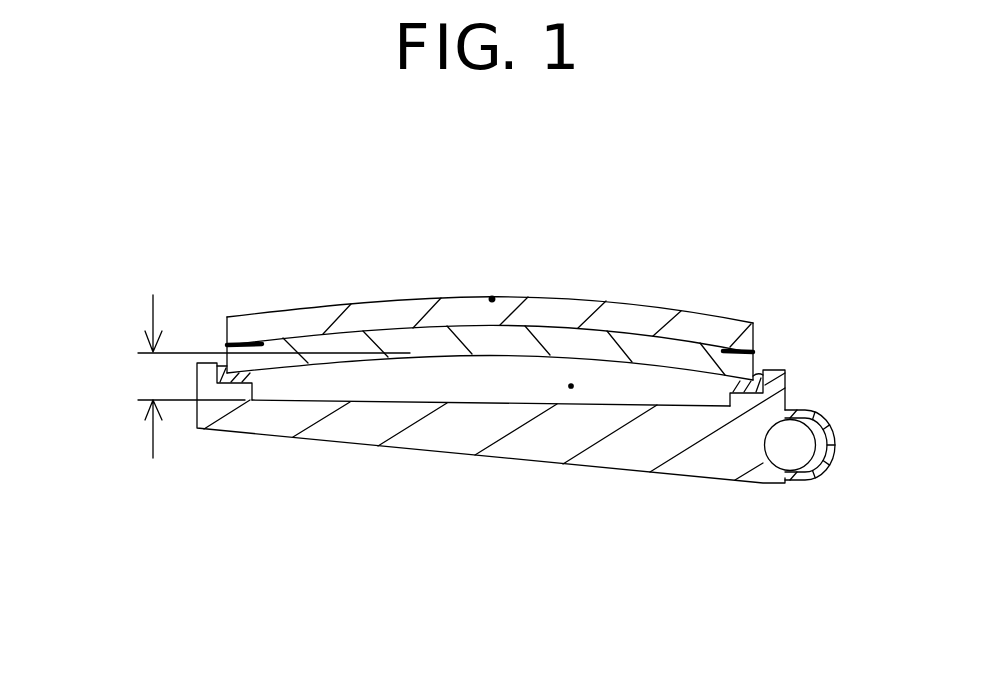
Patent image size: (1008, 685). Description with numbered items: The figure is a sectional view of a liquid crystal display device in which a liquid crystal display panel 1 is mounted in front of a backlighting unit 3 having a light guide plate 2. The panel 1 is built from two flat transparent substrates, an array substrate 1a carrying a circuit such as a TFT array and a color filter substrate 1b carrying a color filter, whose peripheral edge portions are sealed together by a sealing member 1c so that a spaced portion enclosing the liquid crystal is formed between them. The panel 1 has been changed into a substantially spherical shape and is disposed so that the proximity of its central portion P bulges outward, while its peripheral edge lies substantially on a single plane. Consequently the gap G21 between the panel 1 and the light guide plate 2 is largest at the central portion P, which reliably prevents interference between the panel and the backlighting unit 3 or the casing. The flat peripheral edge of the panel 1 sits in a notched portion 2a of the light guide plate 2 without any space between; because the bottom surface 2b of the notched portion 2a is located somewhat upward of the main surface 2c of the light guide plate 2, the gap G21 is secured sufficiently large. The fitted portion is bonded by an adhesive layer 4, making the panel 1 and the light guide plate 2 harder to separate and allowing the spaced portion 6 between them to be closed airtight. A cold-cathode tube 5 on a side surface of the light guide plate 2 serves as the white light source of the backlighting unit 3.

The liquid crystal display panel 1 is at (832, 162).
The array substrate 1a is at (657, 317).
The color filter substrate 1b is at (673, 352).
The sealing member 1c is at (732, 347).
The light guide plate 2 is at (683, 468).
The notched portion 2a is at (758, 373).
The bottom surface 2b is at (232, 370).
The main surface 2c is at (440, 402).
The backlighting unit 3 is at (773, 552).
The adhesive layer 4 is at (735, 418).
The cold-cathode tube 5 is at (783, 457).
The spaced portion 6 is at (571, 386).
The central portion P is at (492, 299).
The gap G21 is at (153, 382).